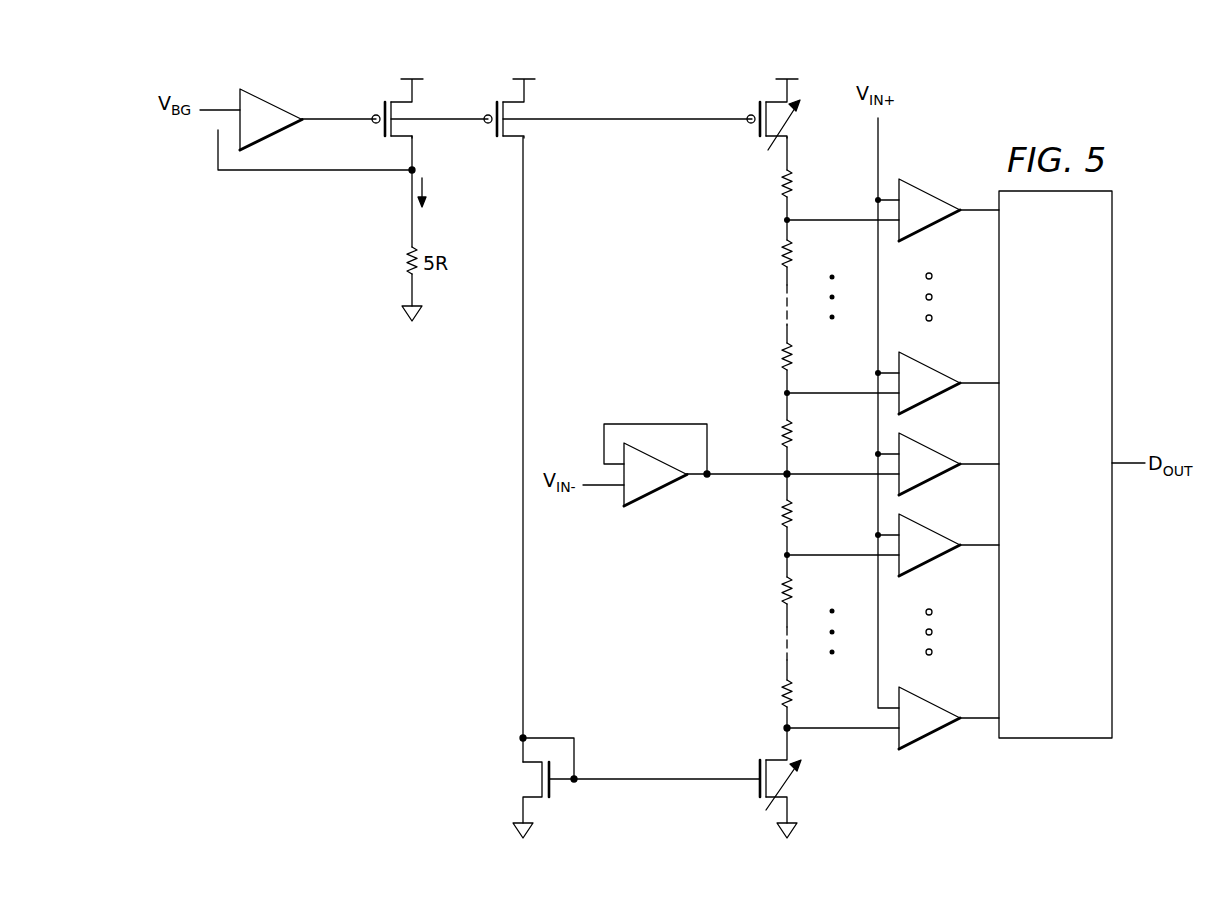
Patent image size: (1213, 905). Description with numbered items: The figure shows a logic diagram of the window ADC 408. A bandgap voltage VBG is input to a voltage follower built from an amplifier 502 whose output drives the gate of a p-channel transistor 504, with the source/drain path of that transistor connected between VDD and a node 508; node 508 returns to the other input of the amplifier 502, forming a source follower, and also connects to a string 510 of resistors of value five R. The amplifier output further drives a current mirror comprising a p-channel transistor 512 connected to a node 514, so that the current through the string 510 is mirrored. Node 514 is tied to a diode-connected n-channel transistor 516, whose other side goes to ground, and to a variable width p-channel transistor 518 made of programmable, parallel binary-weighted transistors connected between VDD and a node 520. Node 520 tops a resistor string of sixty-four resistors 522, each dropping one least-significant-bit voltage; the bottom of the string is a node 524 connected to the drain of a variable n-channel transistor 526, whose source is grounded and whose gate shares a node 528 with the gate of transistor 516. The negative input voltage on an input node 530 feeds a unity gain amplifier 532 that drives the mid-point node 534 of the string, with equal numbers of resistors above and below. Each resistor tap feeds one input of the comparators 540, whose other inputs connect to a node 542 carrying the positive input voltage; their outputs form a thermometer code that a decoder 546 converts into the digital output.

The window ADC 408 is at (573, 73).
The amplifier 502 is at (268, 101).
The p-channel transistor 504 is at (374, 112).
The node 508 is at (406, 175).
The string of resistors 510 is at (406, 262).
The p-channel transistor 512 is at (486, 112).
The node 514 is at (636, 117).
The n-channel transistor 516 is at (552, 790).
The variable width p-channel transistor 518 is at (753, 112).
The node 520 is at (790, 158).
The resistors 522 is at (783, 184).
The node 524 is at (792, 726).
The variable n-channel transistor 526 is at (758, 792).
The node 528 is at (655, 778).
The input node 530 is at (603, 487).
The unity gain amplifier 532 is at (660, 493).
The node 534 is at (792, 480).
The comparators 540 is at (930, 194).
The node 542 is at (880, 147).
The decoder 546 is at (1073, 499).